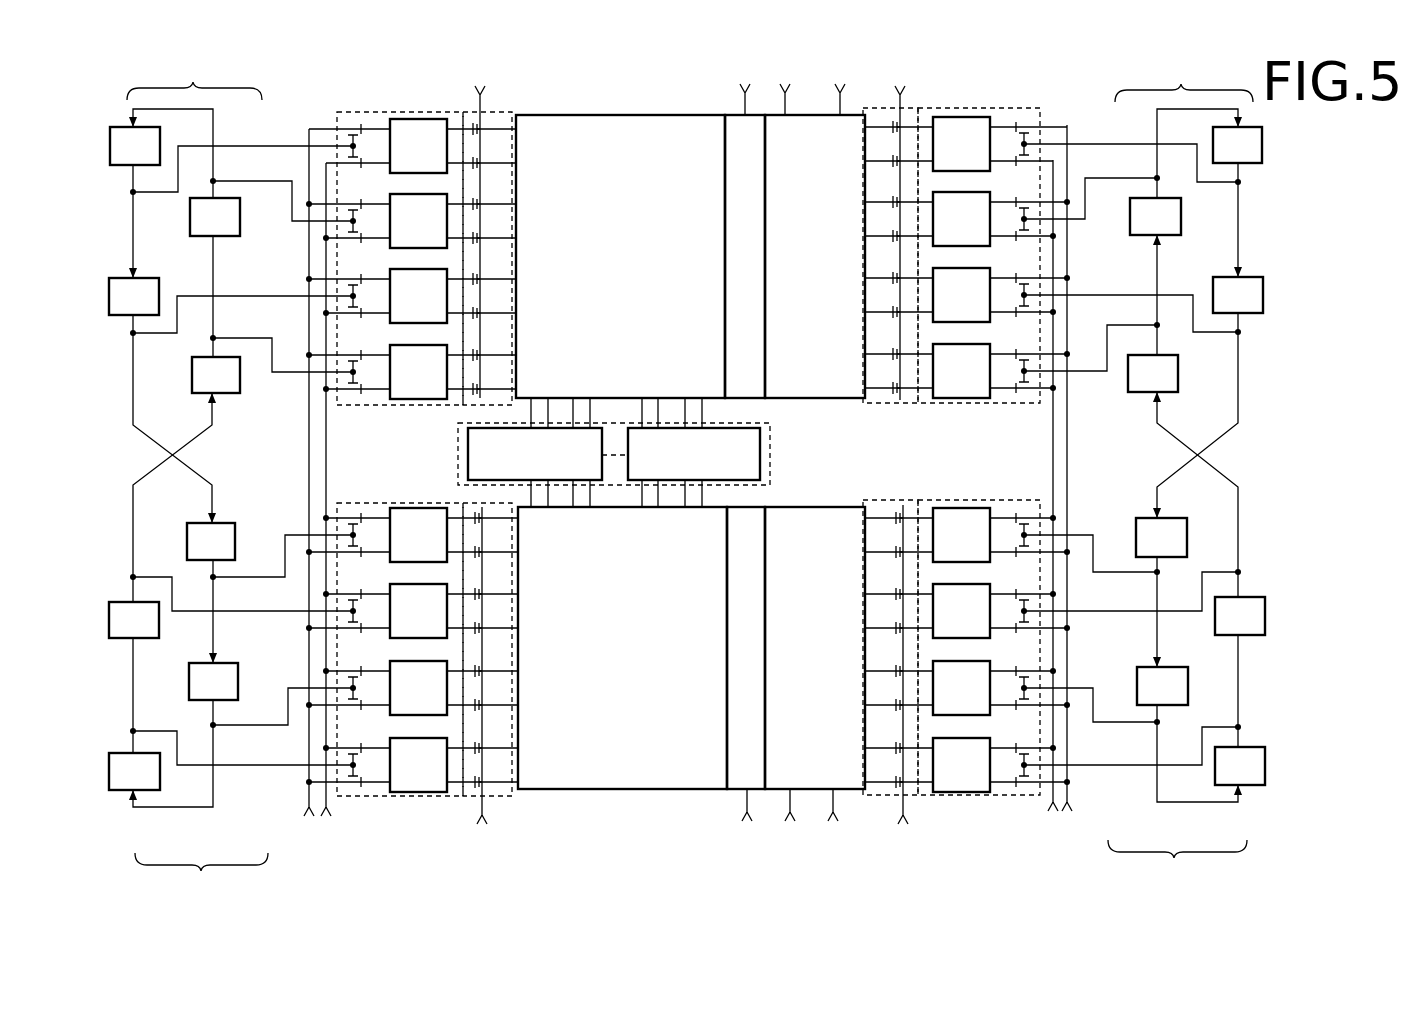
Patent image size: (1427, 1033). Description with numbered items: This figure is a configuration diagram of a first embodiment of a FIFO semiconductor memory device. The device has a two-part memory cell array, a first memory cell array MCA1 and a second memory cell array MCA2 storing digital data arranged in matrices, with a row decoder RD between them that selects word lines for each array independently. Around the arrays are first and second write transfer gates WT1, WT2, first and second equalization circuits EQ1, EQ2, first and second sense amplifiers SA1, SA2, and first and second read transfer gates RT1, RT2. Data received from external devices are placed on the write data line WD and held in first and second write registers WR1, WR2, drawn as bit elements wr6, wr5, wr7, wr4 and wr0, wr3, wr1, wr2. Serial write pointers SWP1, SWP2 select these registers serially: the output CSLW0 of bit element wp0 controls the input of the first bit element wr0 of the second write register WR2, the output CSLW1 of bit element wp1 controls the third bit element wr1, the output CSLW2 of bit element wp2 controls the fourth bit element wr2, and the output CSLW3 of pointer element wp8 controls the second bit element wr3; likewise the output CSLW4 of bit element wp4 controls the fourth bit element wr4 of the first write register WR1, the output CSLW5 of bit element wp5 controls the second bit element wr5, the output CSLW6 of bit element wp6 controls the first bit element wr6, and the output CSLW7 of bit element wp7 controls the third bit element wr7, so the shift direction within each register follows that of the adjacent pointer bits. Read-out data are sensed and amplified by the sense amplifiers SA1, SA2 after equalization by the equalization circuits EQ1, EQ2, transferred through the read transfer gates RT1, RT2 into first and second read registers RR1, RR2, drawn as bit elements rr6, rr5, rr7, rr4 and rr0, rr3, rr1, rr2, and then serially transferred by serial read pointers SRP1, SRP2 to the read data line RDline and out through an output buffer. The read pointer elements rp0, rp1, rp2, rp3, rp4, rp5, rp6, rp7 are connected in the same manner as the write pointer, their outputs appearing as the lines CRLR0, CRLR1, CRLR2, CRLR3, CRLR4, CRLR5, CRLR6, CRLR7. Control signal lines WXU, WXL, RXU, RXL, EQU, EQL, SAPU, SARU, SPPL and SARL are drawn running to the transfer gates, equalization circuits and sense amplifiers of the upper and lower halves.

The first memory cell array MCA1 is at (596, 115).
The second memory cell array MCA2 is at (622, 790).
The first sense amplifier SA1 is at (838, 398).
The second sense amplifier SA2 is at (852, 506).
The first equalization circuit EQ1 is at (748, 399).
The second equalization circuit EQ2 is at (748, 506).
The row decoder RD is at (772, 460).
The read data line RDline is at (1067, 492).
The first write register WR1 is at (383, 112).
The second write register WR2 is at (383, 797).
The first write transfer gate WT1 is at (507, 112).
The second write transfer gate WT2 is at (512, 797).
The first read register RR1 is at (978, 108).
The second read register RR2 is at (995, 498).
The first read transfer gate RT1 is at (888, 404).
The second read transfer gate RT2 is at (890, 500).
The write data line WD is at (308, 498).
The upper write transfer signal WXU is at (479, 219).
The lower write transfer signal WXL is at (481, 691).
The upper read transfer signal RXU is at (899, 221).
The lower read transfer signal RXL is at (902, 687).
The upper equalize signal EQU is at (744, 75).
The lower equalize signal EQL is at (746, 829).
The upper sense amp P signal SAPU is at (784, 70).
The upper sense amp R signal SARU is at (839, 65).
The lower sense amp P signal SPPL is at (789, 834).
The lower sense amp R signal SARL is at (832, 836).
The first bit element of the second write register wr0 is at (412, 535).
The third bit element of the second write register wr1 is at (412, 688).
The fourth bit element of the second write register wr2 is at (412, 765).
The second bit element of the second write register wr3 is at (412, 611).
The fourth bit element of the first write register wr4 is at (411, 372).
The second bit element of the first write register wr5 is at (411, 221).
The first bit element of the first write register wr6 is at (412, 146).
The third bit element of the first write register wr7 is at (411, 296).
The read register cell 0 rr0 is at (967, 535).
The read register cell 1 rr1 is at (967, 688).
The read register cell 2 rr2 is at (967, 765).
The read register cell 3 rr3 is at (967, 611).
The read register cell 4 rr4 is at (967, 371).
The read register cell 5 rr5 is at (967, 219).
The read register cell 6 rr6 is at (966, 144).
The read register cell 7 rr7 is at (967, 295).
The bit element of the serial write pointer wp0 is at (211, 593).
The bit element of the serial write pointer wp1 is at (183, 735).
The bit element of the serial write pointer wp2 is at (134, 771).
The bit element of the serial write pointer wp4 is at (185, 479).
The bit element of the serial write pointer wp5 is at (215, 277).
The bit element of the serial write pointer wp6 is at (163, 193).
The bit element of the serial write pointer wp7 is at (162, 395).
The write pointer 8 wp8 is at (134, 677).
The element of the serial read pointer rp0 is at (1161, 592).
The element of the serial read pointer rp1 is at (1189, 734).
The element of the serial read pointer rp2 is at (1240, 766).
The element of the serial read pointer rp3 is at (1240, 672).
The element of the serial read pointer rp4 is at (1184, 476).
The element of the serial read pointer rp5 is at (1155, 276).
The element of the serial read pointer rp6 is at (1208, 193).
The element of the serial read pointer rp7 is at (1208, 392).
The output of bit element wp0 CSLW0 is at (282, 538).
The output of bit element wp1 CSLW1 is at (240, 727).
The output of bit element wp2 CSLW2 is at (196, 770).
The output of the corresponding write pointer bit element CSLW3 is at (258, 613).
The output of bit element wp4 CSLW4 is at (272, 380).
The output of bit element wp5 CSLW5 is at (292, 223).
The output of bit element wp6 CSLW6 is at (250, 146).
The output of bit element wp7 CSLW7 is at (258, 298).
The read column select line 0 CRLR0 is at (1088, 534).
The read column select line 1 CRLR1 is at (1102, 723).
The read column select line 2 CRLR2 is at (1122, 767).
The read column select line 3 CRLR3 is at (1110, 613).
The read column select line 4 CRLR4 is at (1107, 327).
The read column select line 5 CRLR5 is at (1087, 178).
The read column select line 6 CRLR6 is at (1082, 144).
The read column select line 7 CRLR7 is at (1095, 295).
The serial write pointer SWP1 is at (194, 63).
The serial write pointer SWP2 is at (201, 879).
The serial read pointer SRP1 is at (1184, 80).
The serial read pointer SRP2 is at (1177, 866).